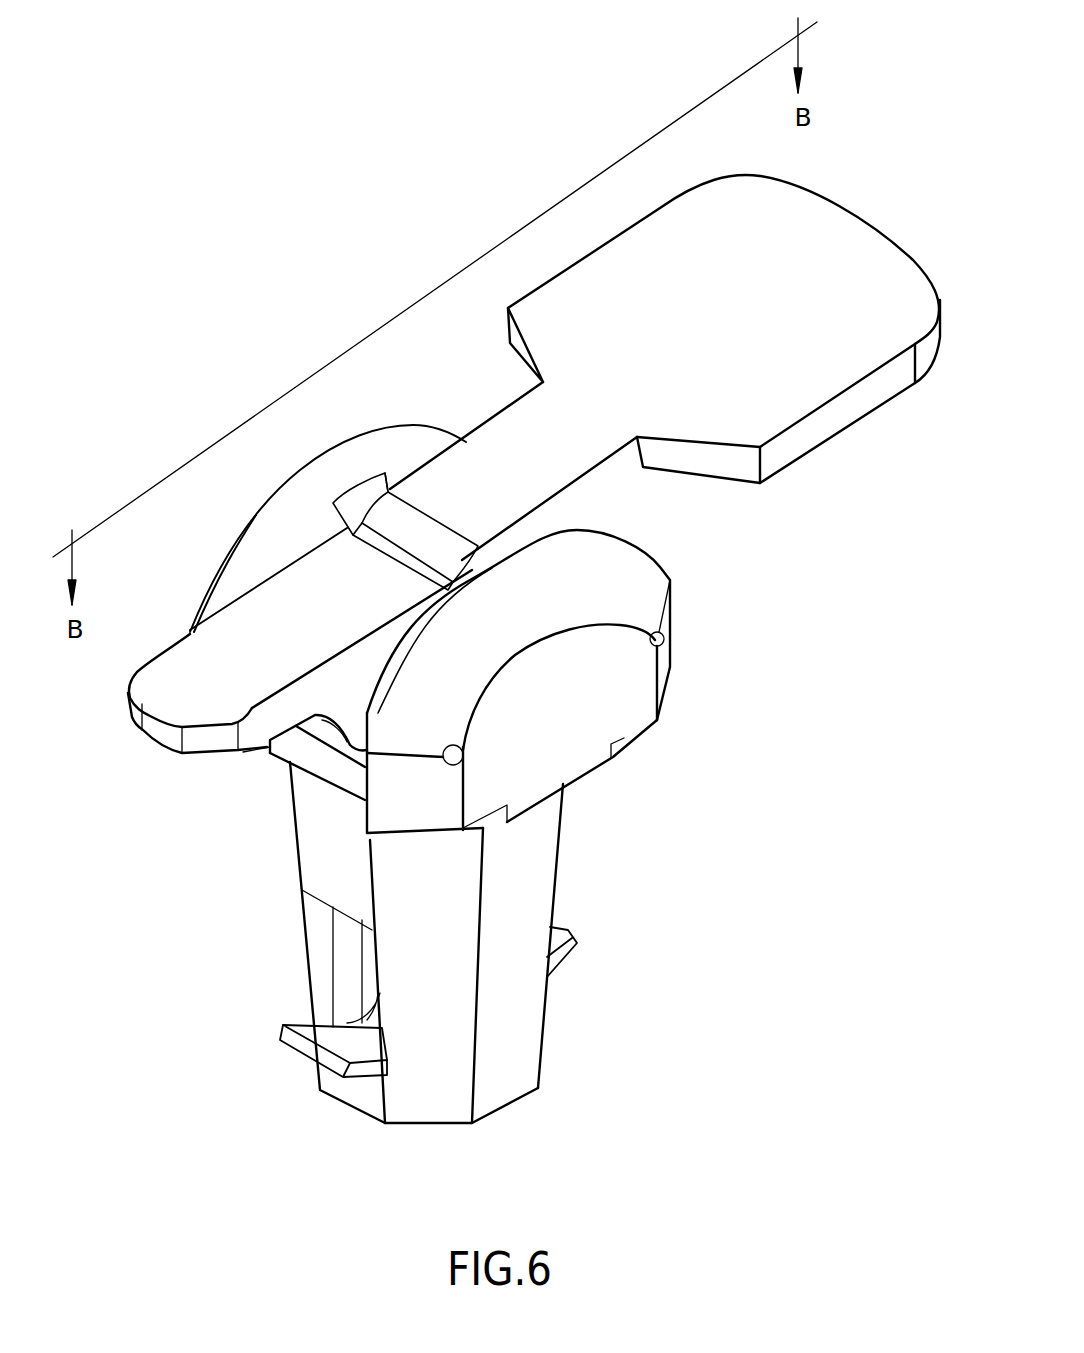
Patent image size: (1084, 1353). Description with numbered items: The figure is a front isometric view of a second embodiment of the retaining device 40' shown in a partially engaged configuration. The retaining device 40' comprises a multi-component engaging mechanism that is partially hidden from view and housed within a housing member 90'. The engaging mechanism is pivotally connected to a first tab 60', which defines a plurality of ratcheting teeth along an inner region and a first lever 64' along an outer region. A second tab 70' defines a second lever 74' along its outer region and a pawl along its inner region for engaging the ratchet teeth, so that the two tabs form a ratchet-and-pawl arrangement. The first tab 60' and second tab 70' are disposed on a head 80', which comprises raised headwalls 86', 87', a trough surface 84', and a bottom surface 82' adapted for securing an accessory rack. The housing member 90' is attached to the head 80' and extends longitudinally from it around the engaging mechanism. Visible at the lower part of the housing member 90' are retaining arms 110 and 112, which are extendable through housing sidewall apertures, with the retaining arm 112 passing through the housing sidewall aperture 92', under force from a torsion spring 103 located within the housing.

The retaining device 40' is at (526, 612).
The first tab 60' is at (526, 452).
The first lever 64' is at (724, 321).
The second tab 70' is at (398, 545).
The second lever 74' is at (189, 668).
The raised headwall 86' is at (334, 483).
The raised headwall 87' is at (584, 640).
The head 80' is at (466, 836).
The trough surface 84' is at (223, 777).
The bottom surface 82' is at (641, 935).
The housing member 90' is at (481, 952).
The housing sidewall aperture 92' is at (287, 934).
The torsion spring 103 is at (363, 1020).
The retaining arm 110 is at (571, 960).
The retaining arm 112 is at (281, 1026).